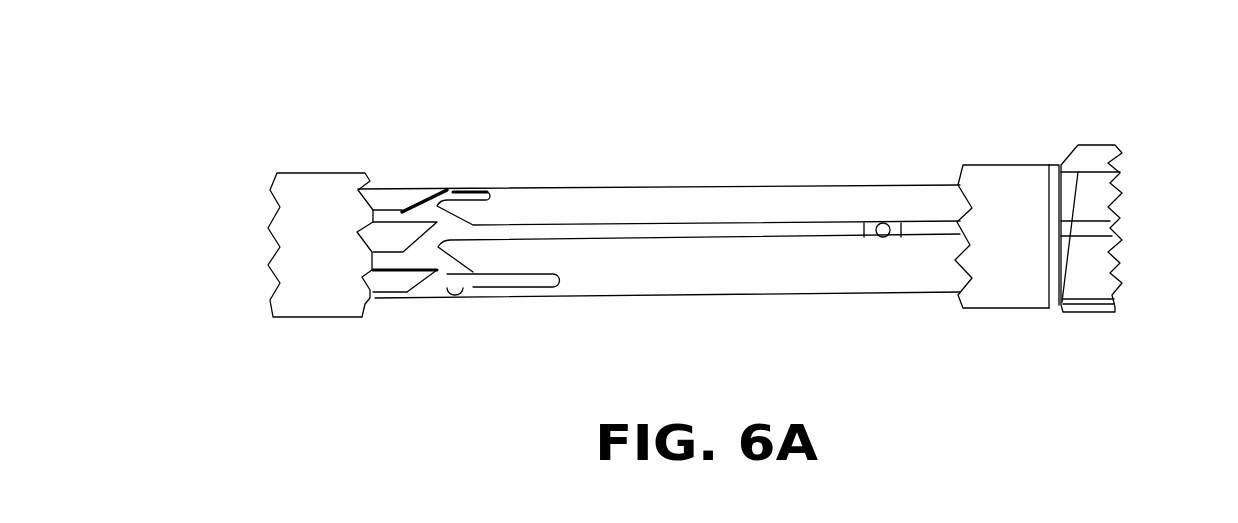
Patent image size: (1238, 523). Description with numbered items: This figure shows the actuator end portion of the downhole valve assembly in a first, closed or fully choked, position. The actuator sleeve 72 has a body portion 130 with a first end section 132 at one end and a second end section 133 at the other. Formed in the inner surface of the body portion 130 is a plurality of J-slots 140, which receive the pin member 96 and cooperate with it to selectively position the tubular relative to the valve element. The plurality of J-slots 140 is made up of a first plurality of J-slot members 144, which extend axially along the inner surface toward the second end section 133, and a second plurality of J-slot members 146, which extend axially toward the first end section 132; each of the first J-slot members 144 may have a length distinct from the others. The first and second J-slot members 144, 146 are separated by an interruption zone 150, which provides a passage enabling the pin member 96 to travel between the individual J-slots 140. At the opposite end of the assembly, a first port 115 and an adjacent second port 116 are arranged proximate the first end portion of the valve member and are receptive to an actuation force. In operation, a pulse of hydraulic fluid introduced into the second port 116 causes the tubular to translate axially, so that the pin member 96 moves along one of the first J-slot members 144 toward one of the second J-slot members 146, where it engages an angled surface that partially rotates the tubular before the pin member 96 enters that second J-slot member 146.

The actuator sleeve 72 is at (450, 115).
The first end section 132 is at (287, 182).
The plurality of J-slots 140 is at (621, 282).
The second plurality of J-slot members 146 is at (388, 225).
The interruption zone 150 is at (412, 318).
The first plurality of J-slot members 144 is at (467, 292).
The pin member 96 is at (880, 223).
The body portion 130 is at (1001, 172).
The second end section 133 is at (1058, 297).
The first port 115 is at (1092, 152).
The second port 116 is at (1096, 247).